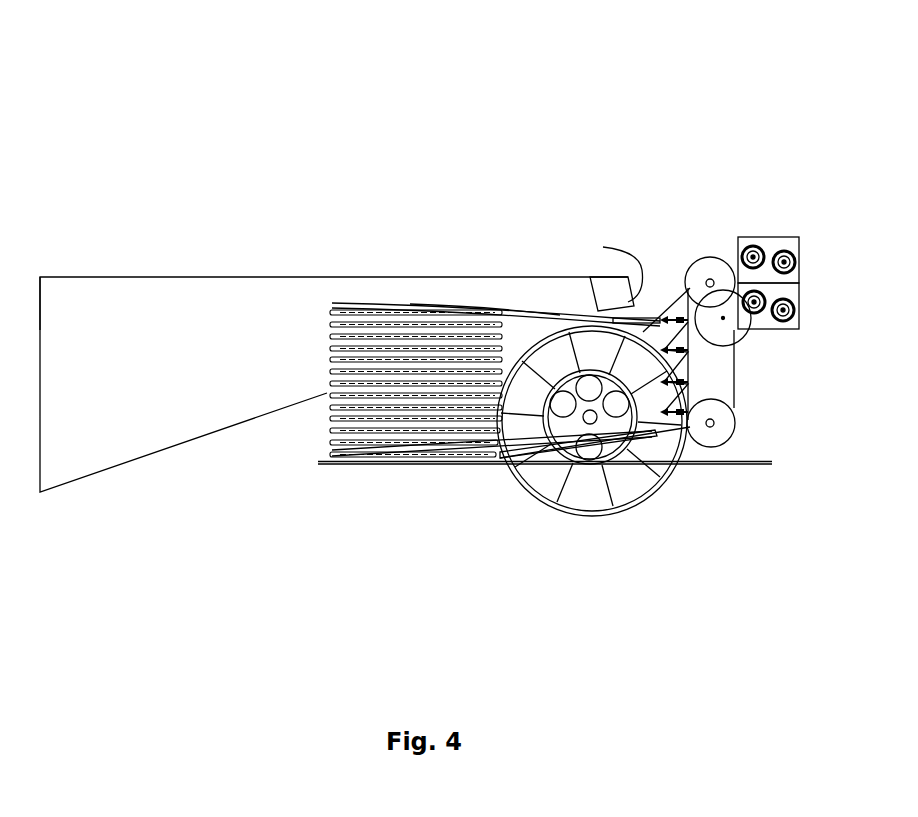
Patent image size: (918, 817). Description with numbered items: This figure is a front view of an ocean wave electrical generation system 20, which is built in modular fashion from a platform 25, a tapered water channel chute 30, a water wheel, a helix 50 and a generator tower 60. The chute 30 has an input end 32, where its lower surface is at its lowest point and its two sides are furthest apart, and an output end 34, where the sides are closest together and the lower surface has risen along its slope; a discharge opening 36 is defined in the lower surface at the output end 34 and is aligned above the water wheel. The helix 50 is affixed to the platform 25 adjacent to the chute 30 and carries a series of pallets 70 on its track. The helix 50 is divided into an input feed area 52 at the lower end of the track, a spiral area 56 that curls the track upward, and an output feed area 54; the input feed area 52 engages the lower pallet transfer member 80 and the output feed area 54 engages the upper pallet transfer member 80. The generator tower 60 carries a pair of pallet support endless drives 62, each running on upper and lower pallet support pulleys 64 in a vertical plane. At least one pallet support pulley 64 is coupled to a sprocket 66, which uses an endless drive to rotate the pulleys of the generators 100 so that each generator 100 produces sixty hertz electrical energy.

The ocean wave electrical generation system 20 is at (276, 138).
The platform 25 is at (545, 503).
The tapered water channel chute 30 is at (334, 346).
The input end 32 is at (55, 270).
The output end 34 is at (592, 270).
The discharge opening 36 is at (609, 263).
The helix 50 is at (322, 434).
The input feed area 52 is at (625, 437).
The output feed area 54 is at (580, 309).
The spiral area 56 is at (343, 452).
The generator tower 60 is at (786, 303).
The pallet support endless drive 62 is at (687, 300).
The pallet support pulley 64 is at (707, 258).
The sprocket 66 is at (730, 331).
The pallet 70 is at (690, 322).
The pallet transfer member 80 is at (652, 320).
The generator 100 is at (755, 297).